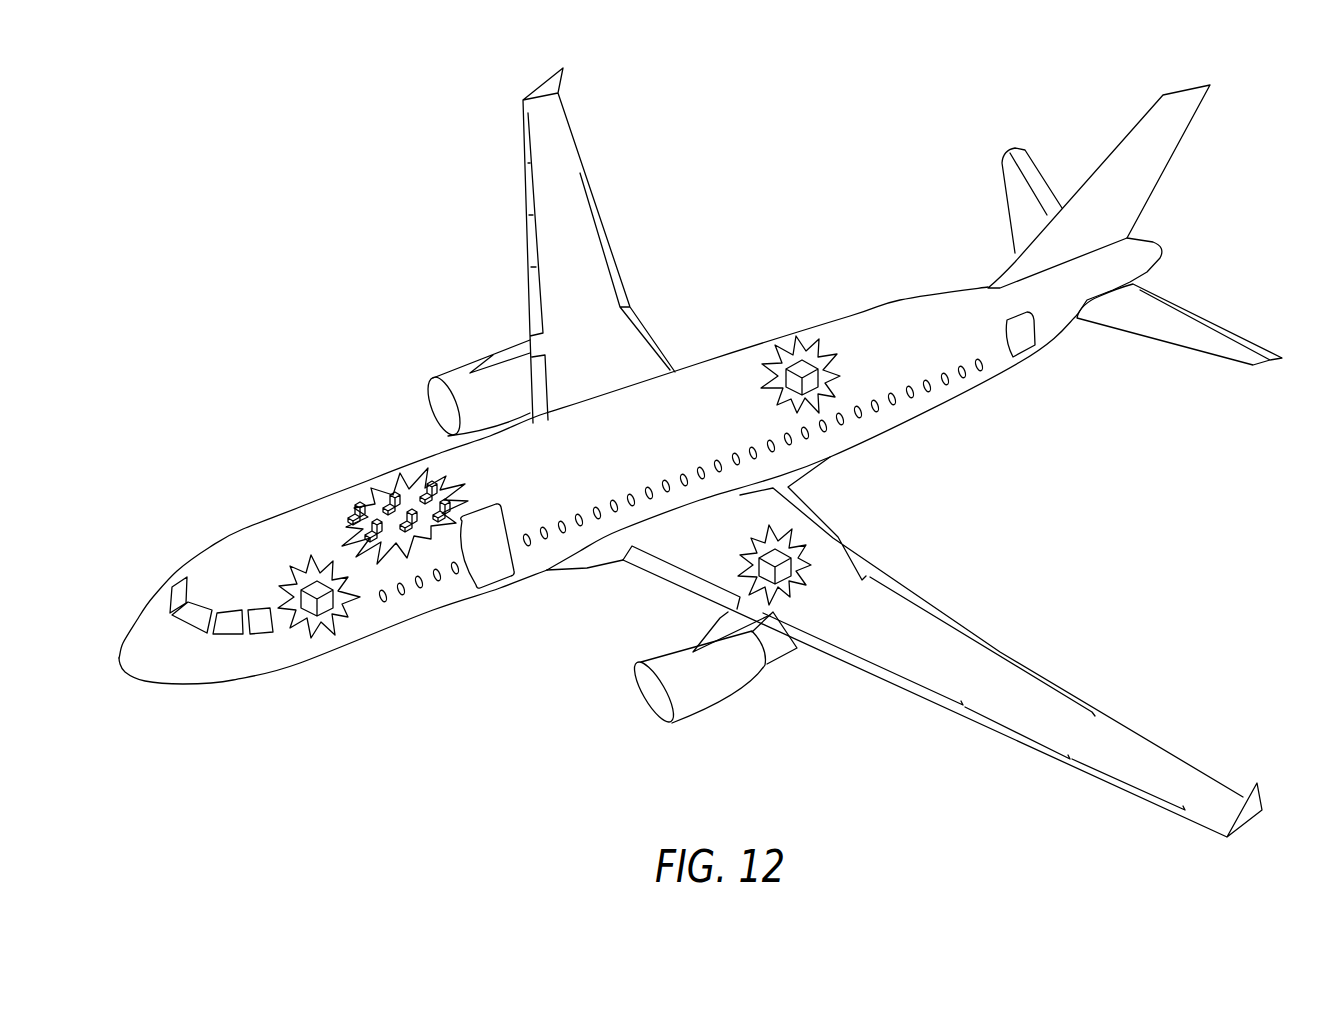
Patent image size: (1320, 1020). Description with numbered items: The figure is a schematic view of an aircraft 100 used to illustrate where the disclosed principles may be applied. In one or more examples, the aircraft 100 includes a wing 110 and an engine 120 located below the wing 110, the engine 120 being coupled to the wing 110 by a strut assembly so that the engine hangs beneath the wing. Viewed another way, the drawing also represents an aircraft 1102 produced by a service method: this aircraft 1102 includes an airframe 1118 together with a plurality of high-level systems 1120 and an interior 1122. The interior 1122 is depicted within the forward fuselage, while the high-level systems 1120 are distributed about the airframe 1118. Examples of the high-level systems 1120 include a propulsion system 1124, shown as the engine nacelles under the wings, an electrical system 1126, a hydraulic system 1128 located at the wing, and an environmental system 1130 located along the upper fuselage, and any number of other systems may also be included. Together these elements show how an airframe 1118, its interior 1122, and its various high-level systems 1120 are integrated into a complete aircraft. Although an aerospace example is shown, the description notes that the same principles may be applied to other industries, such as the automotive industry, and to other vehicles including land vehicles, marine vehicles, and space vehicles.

The aircraft 100 is at (747, 168).
The wing 110 is at (942, 647).
The engine 120 is at (598, 567).
The aircraft 1102 is at (350, 200).
The airframe 1118 is at (358, 453).
The high-level systems 1120 is at (1048, 527).
The interior 1122 is at (362, 506).
The propulsion system 1124 is at (456, 371).
The electrical system 1126 is at (317, 583).
The hydraulic system 1128 is at (782, 547).
The environmental system 1130 is at (800, 363).